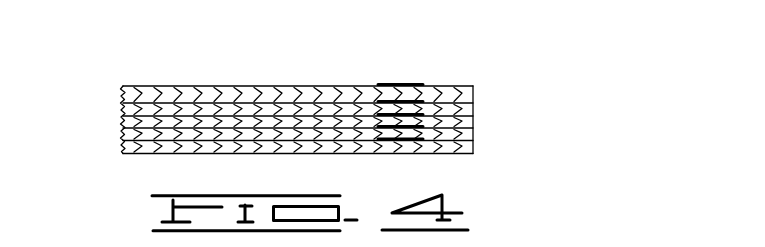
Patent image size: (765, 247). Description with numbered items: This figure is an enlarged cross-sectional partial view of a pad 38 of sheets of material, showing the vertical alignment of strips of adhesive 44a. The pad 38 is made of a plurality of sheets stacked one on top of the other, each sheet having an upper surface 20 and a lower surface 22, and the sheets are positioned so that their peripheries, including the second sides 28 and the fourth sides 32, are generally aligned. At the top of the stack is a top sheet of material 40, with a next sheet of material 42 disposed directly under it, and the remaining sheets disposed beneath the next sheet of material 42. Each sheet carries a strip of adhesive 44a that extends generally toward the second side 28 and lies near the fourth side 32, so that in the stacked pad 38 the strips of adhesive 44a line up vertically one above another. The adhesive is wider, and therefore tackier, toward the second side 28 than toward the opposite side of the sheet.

The upper surface 20 is at (315, 103).
The lower surface 22 is at (157, 155).
The second side 28 is at (247, 97).
The fourth side 32 is at (475, 86).
The pad 38 is at (490, 103).
The top sheet of material 40 is at (123, 90).
The next sheet of material 42 is at (123, 103).
The strip of adhesive 44a is at (450, 153).